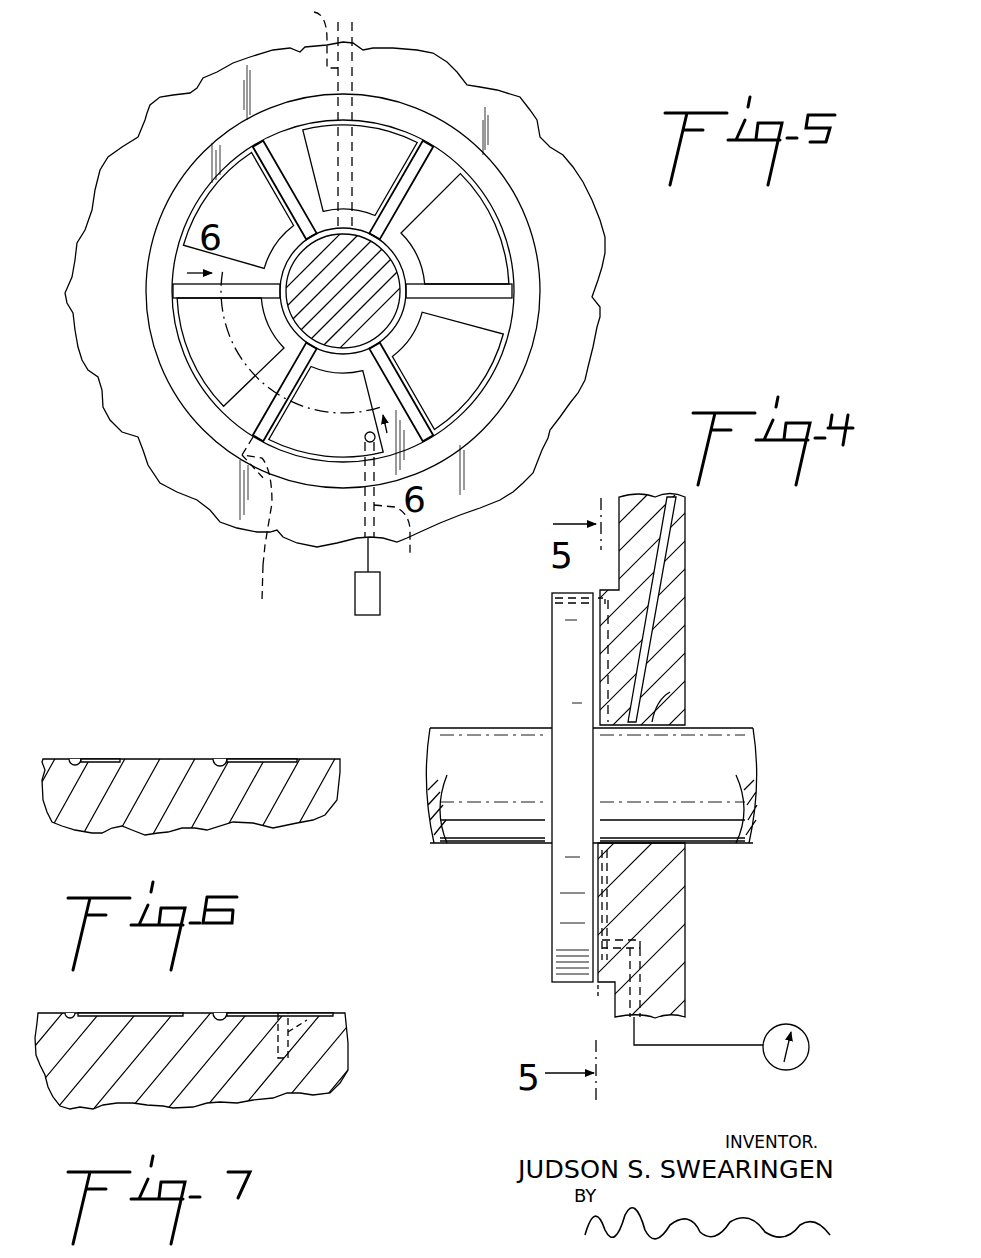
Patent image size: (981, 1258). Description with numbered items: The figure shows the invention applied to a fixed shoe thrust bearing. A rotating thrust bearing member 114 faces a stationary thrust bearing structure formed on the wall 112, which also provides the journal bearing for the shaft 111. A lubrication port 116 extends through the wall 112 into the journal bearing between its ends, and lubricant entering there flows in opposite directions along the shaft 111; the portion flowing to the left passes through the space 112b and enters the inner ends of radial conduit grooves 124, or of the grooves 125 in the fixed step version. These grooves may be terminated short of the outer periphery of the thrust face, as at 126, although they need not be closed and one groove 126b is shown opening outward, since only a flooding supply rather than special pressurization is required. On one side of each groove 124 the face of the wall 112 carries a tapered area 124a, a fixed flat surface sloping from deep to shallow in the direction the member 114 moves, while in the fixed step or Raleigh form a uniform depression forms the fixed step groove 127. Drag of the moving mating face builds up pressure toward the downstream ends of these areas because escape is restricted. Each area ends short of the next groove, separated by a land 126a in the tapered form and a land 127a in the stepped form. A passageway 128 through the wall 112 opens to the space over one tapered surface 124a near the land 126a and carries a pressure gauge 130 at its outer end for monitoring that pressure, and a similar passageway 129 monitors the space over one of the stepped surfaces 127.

In FIG. 5, the shaft 111 is at (165, 263).
In FIG. 4, the shaft 111 is at (487, 743).
In FIG. 5, the wall 112 is at (450, 90).
In FIG. 4, the wall 112 is at (676, 624).
In FIG. 6, the wall 112 is at (120, 810).
In FIG. 4, the space 112b is at (672, 692).
In FIG. 4, the rotating thrust bearing member 114 is at (551, 935).
In FIG. 5, the lubrication port 116 is at (315, 116).
In FIG. 4, the lubrication port 116 is at (665, 558).
In FIG. 5, the conduit groove 124 is at (408, 408).
In FIG. 4, the conduit groove 124 is at (600, 884).
In FIG. 6, the conduit groove 124 is at (78, 757).
In FIG. 5, the tapered area 124a is at (492, 245).
In FIG. 6, the tapered area 124a is at (120, 760).
In FIG. 7, the conduit groove 125 is at (70, 1011).
In FIG. 5, the closed groove end 126 is at (513, 291).
In FIG. 4, the closed groove end 126 is at (598, 602).
In FIG. 5, the land 126a is at (250, 405).
In FIG. 6, the land 126a is at (217, 760).
In FIG. 5, the open groove 126b is at (263, 583).
In FIG. 7, the fixed step groove 127 is at (133, 1012).
In FIG. 7, the land 127a is at (200, 1012).
In FIG. 5, the passageway 128 is at (410, 557).
In FIG. 4, the passageway 128 is at (640, 985).
In FIG. 7, the passageway 129 is at (312, 1004).
In FIG. 5, the pressure gauge 130 is at (380, 605).
In FIG. 4, the pressure gauge 130 is at (809, 1040).